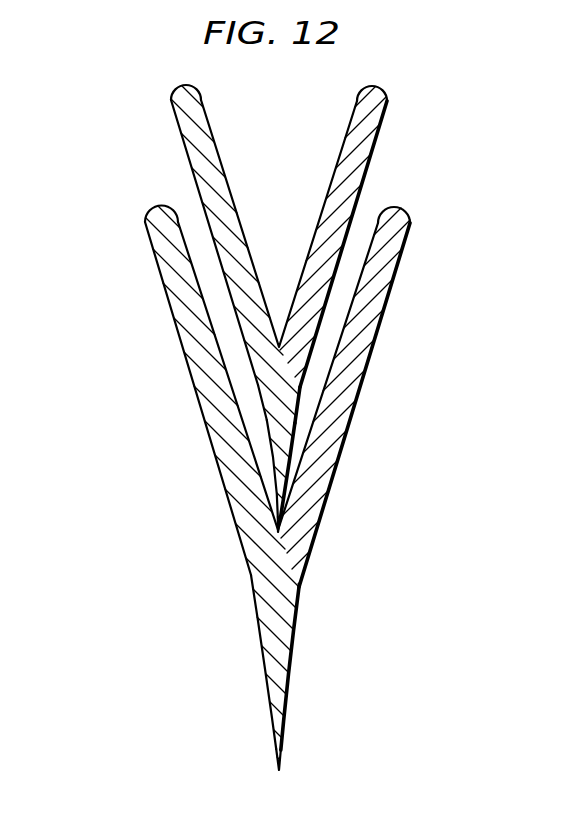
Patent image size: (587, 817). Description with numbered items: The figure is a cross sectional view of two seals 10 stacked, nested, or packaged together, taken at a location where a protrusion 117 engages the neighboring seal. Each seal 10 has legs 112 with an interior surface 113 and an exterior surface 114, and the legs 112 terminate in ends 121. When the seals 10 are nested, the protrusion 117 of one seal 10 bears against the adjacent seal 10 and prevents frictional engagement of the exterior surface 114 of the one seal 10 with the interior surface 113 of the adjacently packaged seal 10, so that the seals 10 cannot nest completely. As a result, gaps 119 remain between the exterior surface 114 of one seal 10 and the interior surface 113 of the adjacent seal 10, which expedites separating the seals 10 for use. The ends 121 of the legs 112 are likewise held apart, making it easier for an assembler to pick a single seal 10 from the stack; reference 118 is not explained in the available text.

The seal 10 is at (100, 123).
The legs 112 is at (196, 137).
The interior surface 113 is at (217, 155).
The exterior surface 114 is at (378, 137).
The protrusion 117 is at (300, 505).
The tapered shaft edge 118 is at (262, 452).
The gaps 119 is at (252, 413).
The ends 121 is at (182, 87).